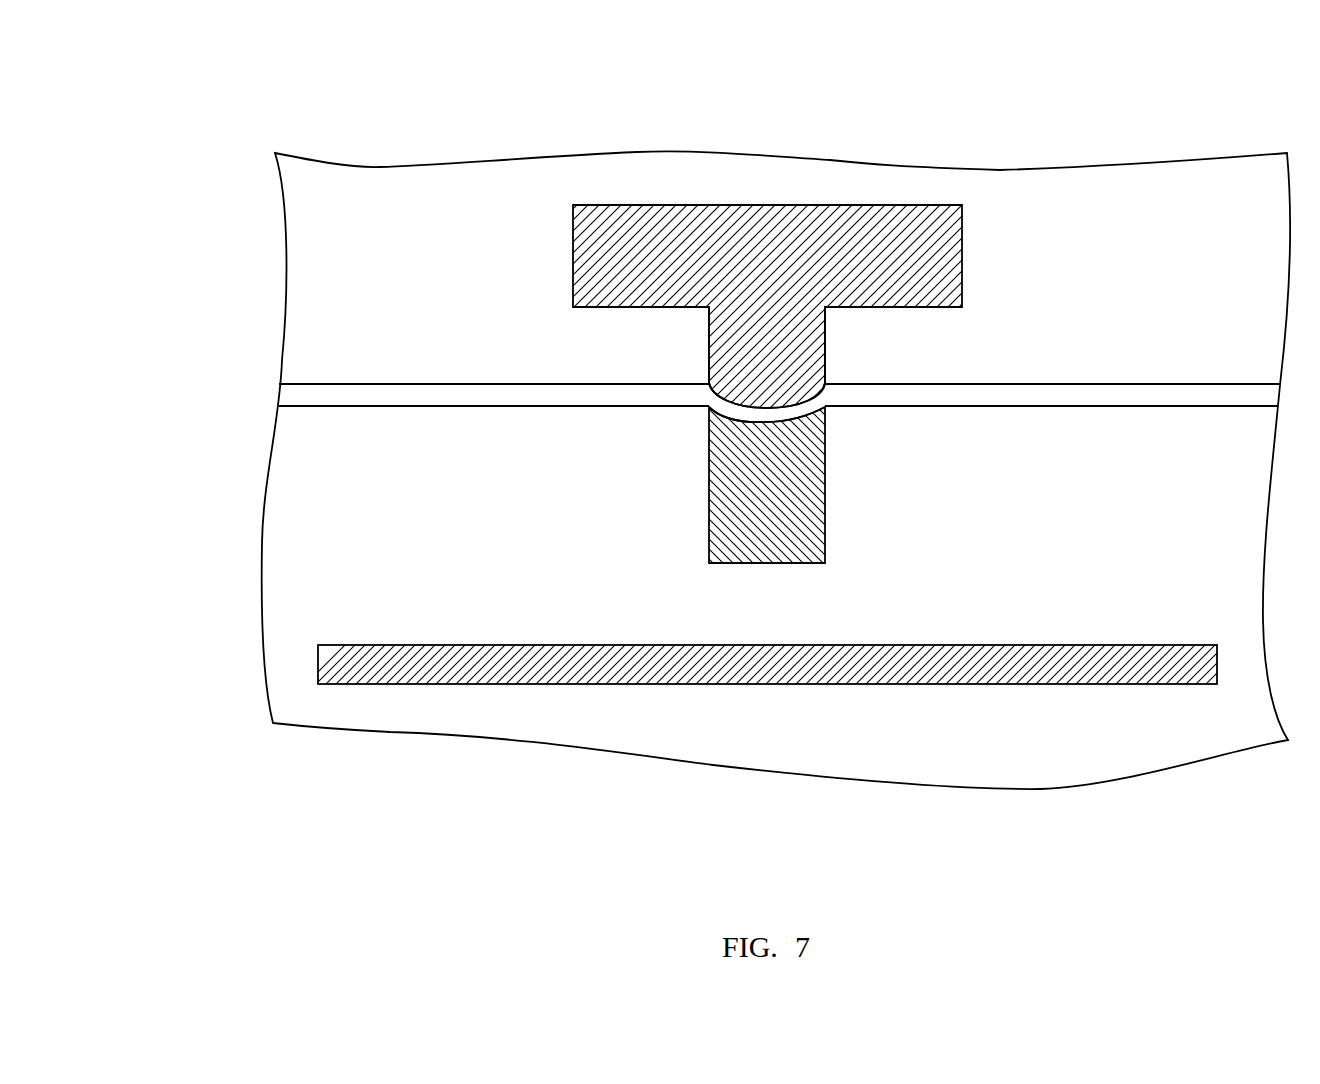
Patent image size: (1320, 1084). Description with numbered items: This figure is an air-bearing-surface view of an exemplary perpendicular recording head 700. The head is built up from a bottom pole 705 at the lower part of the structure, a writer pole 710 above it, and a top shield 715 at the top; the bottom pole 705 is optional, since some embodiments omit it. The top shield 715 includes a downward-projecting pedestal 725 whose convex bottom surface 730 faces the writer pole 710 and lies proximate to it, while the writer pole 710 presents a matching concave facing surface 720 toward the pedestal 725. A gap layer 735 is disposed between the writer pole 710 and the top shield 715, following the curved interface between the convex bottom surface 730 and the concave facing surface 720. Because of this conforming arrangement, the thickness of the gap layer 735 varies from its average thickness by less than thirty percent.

The perpendicular recording head 700 is at (1208, 158).
The bottom pole 705 is at (318, 665).
The writer pole 710 is at (770, 485).
The top shield 715 is at (667, 205).
The concave facing surface 720 is at (805, 418).
The pedestal 725 is at (825, 353).
The convex bottom surface 730 is at (733, 397).
The gap layer 735 is at (277, 396).